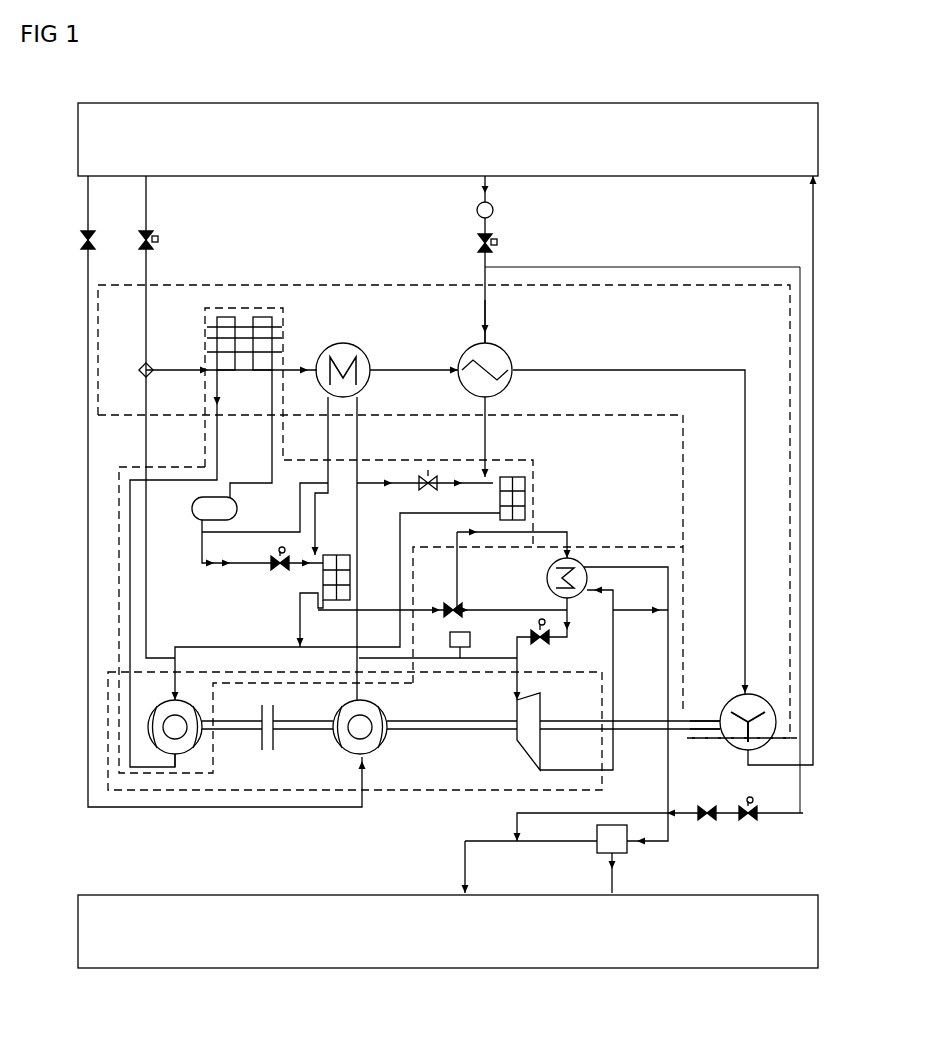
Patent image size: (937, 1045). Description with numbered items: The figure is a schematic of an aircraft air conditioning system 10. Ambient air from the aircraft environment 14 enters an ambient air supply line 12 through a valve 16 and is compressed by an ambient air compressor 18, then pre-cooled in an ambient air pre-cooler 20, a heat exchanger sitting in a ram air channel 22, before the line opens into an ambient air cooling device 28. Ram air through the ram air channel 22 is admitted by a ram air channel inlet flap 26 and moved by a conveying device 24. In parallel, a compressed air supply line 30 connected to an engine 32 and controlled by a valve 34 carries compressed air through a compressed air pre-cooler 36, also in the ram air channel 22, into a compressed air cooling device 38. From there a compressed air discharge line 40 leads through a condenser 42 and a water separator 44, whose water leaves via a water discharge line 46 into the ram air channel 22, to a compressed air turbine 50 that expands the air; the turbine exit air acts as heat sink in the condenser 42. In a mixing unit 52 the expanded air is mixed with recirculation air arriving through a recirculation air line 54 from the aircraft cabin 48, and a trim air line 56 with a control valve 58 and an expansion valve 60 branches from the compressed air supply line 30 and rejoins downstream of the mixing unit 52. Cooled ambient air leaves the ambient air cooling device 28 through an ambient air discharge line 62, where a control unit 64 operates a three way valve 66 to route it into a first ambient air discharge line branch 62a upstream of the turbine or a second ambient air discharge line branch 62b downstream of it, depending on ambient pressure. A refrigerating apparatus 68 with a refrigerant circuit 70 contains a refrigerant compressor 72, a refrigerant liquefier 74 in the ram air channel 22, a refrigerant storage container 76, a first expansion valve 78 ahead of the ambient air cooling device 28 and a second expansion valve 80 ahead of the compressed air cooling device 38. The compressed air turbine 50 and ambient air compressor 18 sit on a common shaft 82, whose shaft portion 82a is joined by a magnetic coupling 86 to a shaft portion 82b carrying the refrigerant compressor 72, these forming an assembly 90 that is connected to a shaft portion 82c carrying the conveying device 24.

The aircraft air conditioning system 10 is at (747, 74).
The ambient air supply line 12 is at (88, 553).
The aircraft environment 14 is at (442, 100).
The valve 16 is at (78, 240).
The ambient air compressor 18 is at (388, 742).
The ambient air pre-cooler 20 is at (343, 343).
The ram air channel 22 is at (415, 287).
The conveying device 24 is at (758, 696).
The ram air channel inlet flap 26 is at (158, 240).
The ambient air cooling device 28 is at (337, 553).
The compressed air supply line 30 is at (490, 322).
The engine 32 is at (496, 210).
The valve 34 is at (497, 243).
The compressed air pre-cooler 36 is at (510, 380).
The compressed air cooling device 38 is at (528, 496).
The compressed air discharge line 40 is at (576, 545).
The condenser 42 is at (548, 584).
The water separator 44 is at (556, 643).
The water discharge line 46 is at (144, 449).
The aircraft cabin 48 is at (465, 969).
The compressed air turbine 50 is at (545, 737).
The mixing unit 52 is at (597, 848).
The recirculation air line 54 is at (622, 862).
The trim air line 56 is at (790, 816).
The control valve 58 is at (757, 821).
The expansion valve 60 is at (703, 821).
The ambient air discharge line 62 is at (372, 606).
The first ambient air discharge line branch 62a is at (466, 570).
The second ambient air discharge line branch 62b is at (632, 614).
The control unit 64 is at (463, 658).
The three way valve 66 is at (450, 603).
The refrigerating apparatus 68 is at (110, 628).
The refrigerant circuit 70 is at (176, 647).
The refrigerant compressor 72 is at (183, 758).
The refrigerant liquefier 74 is at (268, 308).
The refrigerant storage container 76 is at (238, 506).
The first expansion valve 78 is at (277, 572).
The second expansion valve 80 is at (428, 476).
The common shaft 82 is at (652, 740).
The shaft portion 82a is at (495, 732).
The shaft portion 82b is at (250, 733).
The shaft portion 82c is at (705, 717).
The magnetic coupling 86 is at (278, 744).
The assembly 90 is at (150, 792).